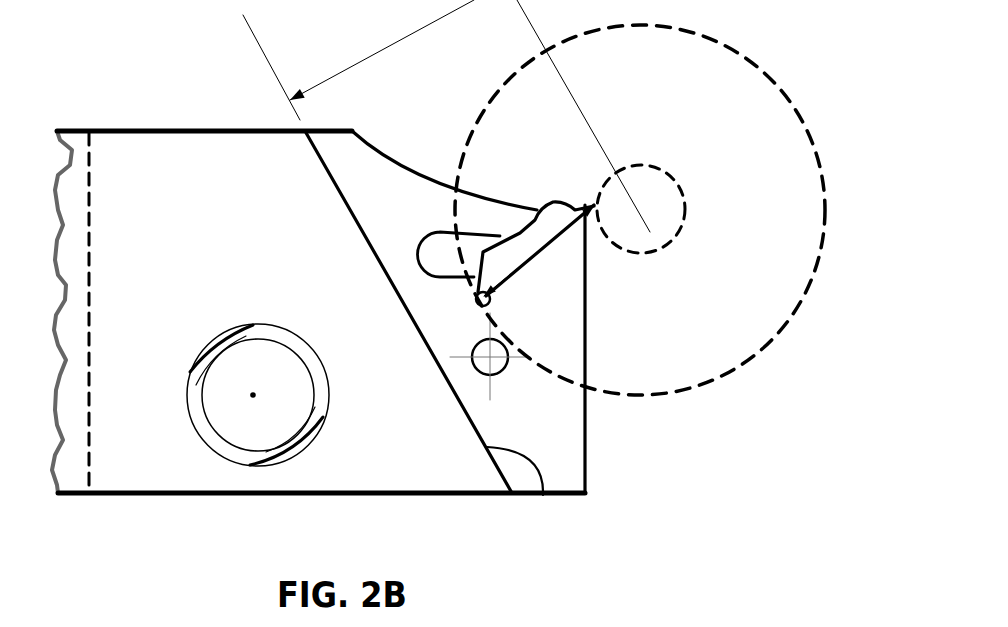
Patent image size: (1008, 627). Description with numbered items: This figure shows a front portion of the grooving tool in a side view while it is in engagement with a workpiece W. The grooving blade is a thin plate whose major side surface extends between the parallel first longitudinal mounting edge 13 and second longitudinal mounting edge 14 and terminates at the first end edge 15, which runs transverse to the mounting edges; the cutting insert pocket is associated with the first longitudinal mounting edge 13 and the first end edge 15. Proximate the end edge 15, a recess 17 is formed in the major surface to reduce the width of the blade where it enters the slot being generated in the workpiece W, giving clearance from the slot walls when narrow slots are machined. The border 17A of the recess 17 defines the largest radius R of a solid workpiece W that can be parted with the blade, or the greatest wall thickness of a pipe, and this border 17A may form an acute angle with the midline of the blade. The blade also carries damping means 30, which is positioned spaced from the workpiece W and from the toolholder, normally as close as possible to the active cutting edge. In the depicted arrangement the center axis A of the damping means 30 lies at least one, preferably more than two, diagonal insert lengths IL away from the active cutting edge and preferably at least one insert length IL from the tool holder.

The first longitudinal mounting edge 13 is at (175, 129).
The second longitudinal mounting edge 14 is at (143, 497).
The first end edge 15 is at (585, 423).
The recess 17 is at (562, 465).
The border of the recess 17A is at (543, 495).
The damping means 30 is at (229, 474).
The center axis of the damping means A is at (269, 400).
The diagonal insert length IL is at (538, 250).
The workpiece W is at (772, 75).
The largest radius of the solid workpiece R is at (446, 116).